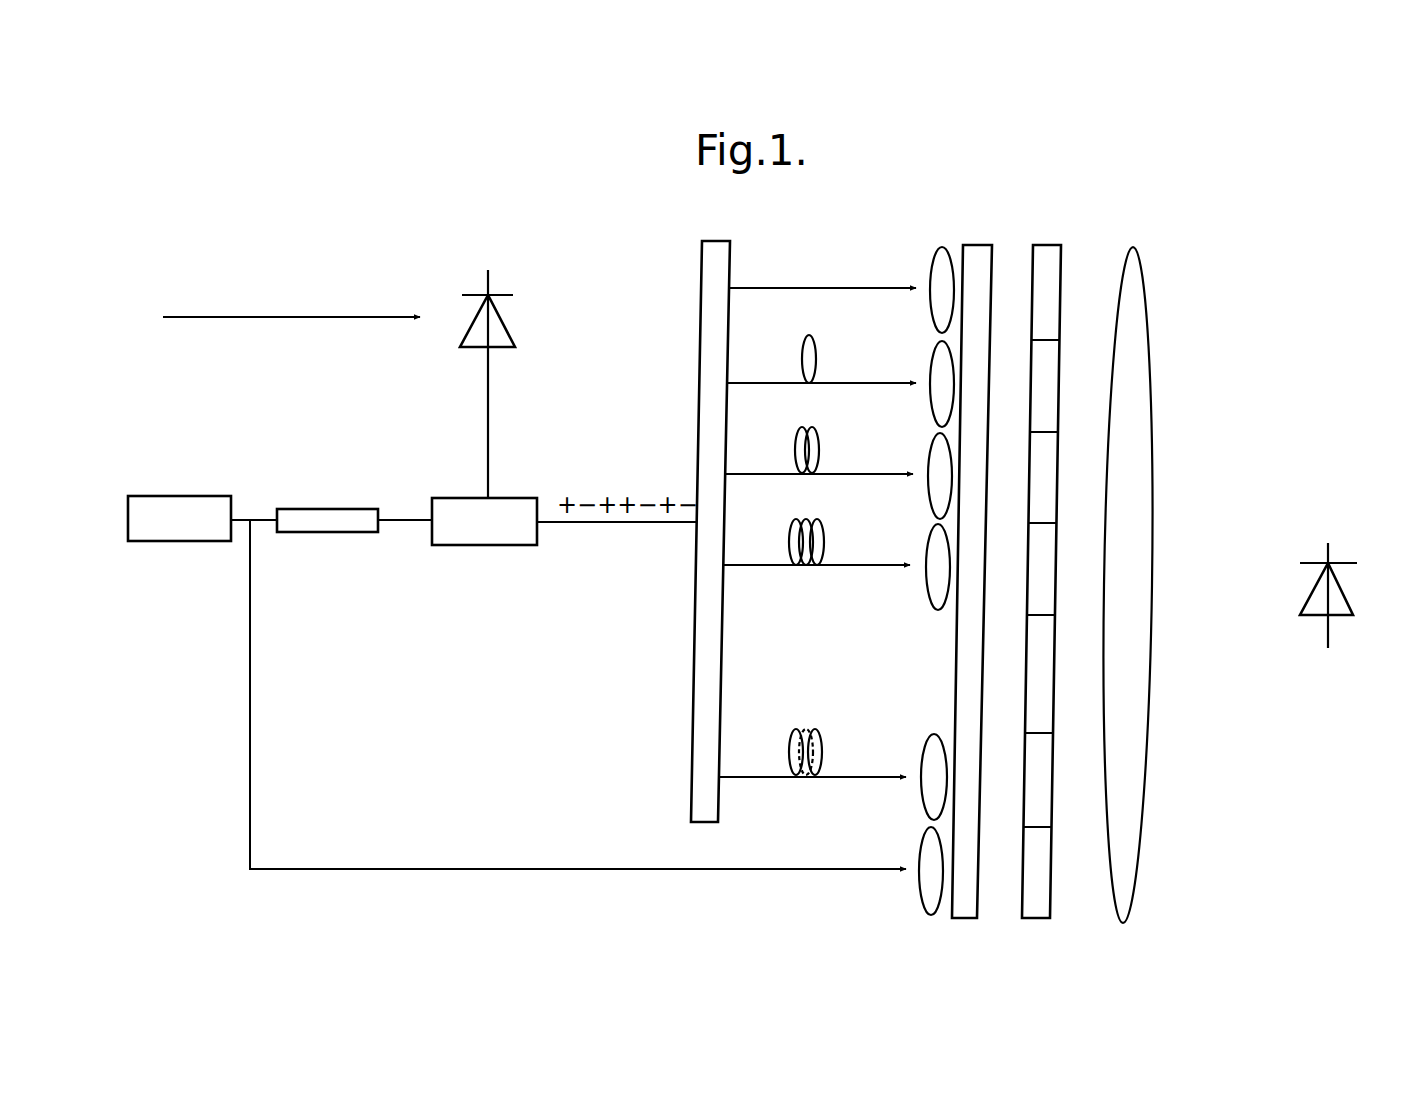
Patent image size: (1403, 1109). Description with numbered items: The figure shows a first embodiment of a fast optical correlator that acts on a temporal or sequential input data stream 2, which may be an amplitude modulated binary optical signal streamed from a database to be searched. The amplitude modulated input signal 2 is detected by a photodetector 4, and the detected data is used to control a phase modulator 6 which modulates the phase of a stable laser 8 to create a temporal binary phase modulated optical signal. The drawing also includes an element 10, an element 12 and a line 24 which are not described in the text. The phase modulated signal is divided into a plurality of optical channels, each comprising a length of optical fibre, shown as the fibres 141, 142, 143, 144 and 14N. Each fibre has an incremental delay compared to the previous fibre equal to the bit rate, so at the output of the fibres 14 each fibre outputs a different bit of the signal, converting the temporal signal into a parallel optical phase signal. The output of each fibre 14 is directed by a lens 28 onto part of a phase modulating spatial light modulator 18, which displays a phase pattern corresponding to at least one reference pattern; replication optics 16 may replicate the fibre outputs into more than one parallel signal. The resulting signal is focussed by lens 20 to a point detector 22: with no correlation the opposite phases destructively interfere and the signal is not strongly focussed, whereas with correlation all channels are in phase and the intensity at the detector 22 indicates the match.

The input data stream 2 is at (322, 274).
The photodetector 4 is at (490, 325).
The phase modulator 6 is at (478, 528).
The stable laser 8 is at (187, 513).
The coupling element 10 is at (322, 518).
The splitter bar 12 is at (710, 267).
The optical fibres 14 is at (827, 534).
The first optical fibre 141 is at (755, 287).
The second optical fibre 142 is at (752, 382).
The third optical fibre 143 is at (750, 472).
The fourth optical fibre 144 is at (748, 563).
The Nth optical fibre 14N is at (752, 779).
The replication optics 16 is at (979, 255).
The phase modulating spatial light modulator 18 is at (1046, 255).
The lens 20 is at (1135, 388).
The point detector 22 is at (1322, 597).
The synchronisation line 24 is at (248, 737).
The lens 28 is at (930, 888).